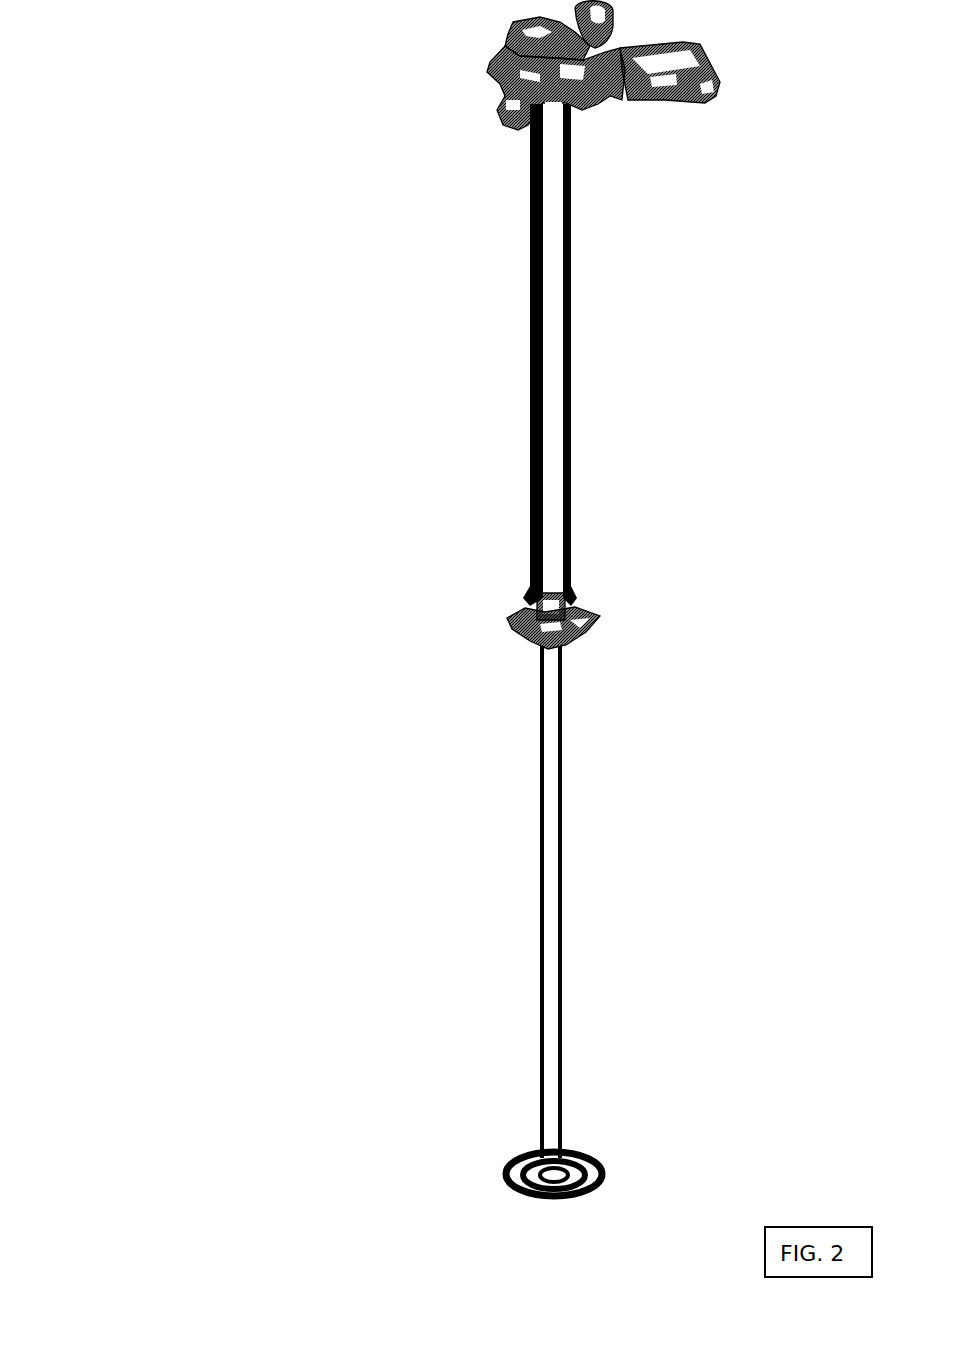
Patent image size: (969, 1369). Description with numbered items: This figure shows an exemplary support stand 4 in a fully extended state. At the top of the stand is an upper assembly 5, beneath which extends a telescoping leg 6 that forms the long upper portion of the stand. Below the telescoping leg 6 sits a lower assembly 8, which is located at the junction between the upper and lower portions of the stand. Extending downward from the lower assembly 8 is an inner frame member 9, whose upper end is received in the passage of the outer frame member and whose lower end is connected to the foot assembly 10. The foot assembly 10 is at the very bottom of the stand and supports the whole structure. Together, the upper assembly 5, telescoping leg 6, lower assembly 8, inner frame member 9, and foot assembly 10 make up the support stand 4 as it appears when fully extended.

The support stand 4 is at (236, 77).
The upper assembly 5 is at (460, 55).
The telescoping leg 6 is at (502, 425).
The lower assembly 8 is at (485, 620).
The inner frame member 9 is at (513, 871).
The foot assembly 10 is at (476, 1170).